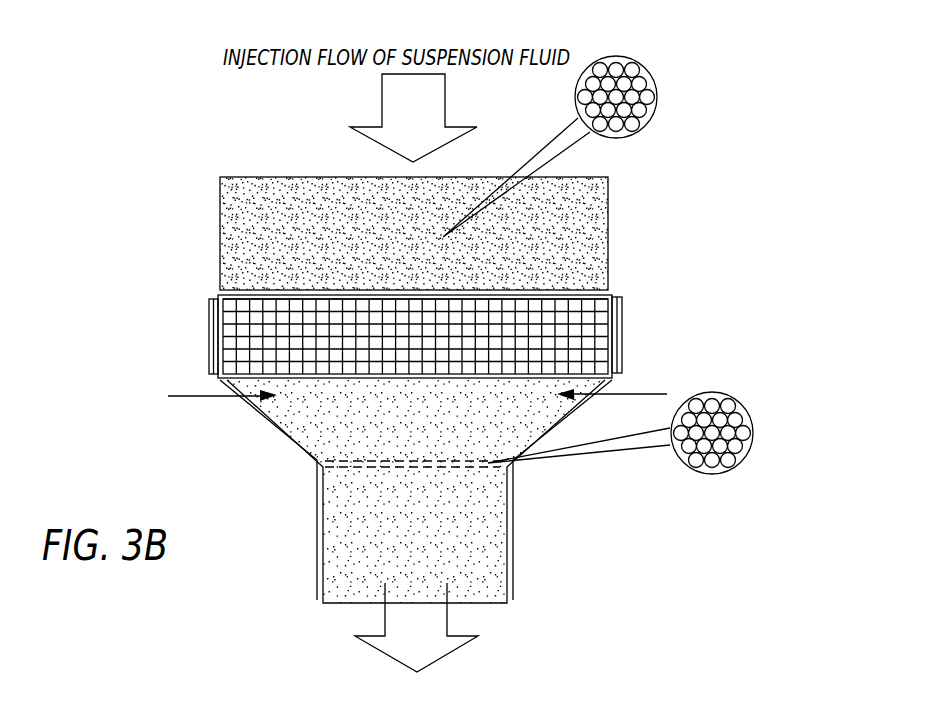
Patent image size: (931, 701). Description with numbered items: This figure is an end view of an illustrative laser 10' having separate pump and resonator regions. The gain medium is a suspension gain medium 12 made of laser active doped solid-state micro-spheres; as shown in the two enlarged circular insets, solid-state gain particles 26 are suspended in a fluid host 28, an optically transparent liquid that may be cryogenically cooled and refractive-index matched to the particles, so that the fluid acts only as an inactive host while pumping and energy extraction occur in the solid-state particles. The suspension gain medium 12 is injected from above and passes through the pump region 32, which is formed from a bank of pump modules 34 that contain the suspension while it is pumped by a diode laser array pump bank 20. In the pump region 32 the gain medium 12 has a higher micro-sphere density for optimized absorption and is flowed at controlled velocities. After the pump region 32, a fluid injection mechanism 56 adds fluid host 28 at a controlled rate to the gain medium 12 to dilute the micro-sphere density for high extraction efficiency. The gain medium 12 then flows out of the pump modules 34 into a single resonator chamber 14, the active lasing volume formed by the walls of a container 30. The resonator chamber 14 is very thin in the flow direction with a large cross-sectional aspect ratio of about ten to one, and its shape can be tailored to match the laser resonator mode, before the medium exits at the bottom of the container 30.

The laser 10' is at (285, 352).
The suspension gain medium 12 is at (600, 233).
The resonator chamber 14 is at (363, 466).
The diode laser array pump bank 20 is at (617, 330).
The solid-state gain particles 26 is at (621, 133).
The fluid host 28 is at (609, 58).
The container 30 is at (318, 545).
The pump region 32 is at (200, 295).
The pump modules 34 is at (612, 290).
The fluid injection mechanism 56 is at (210, 396).